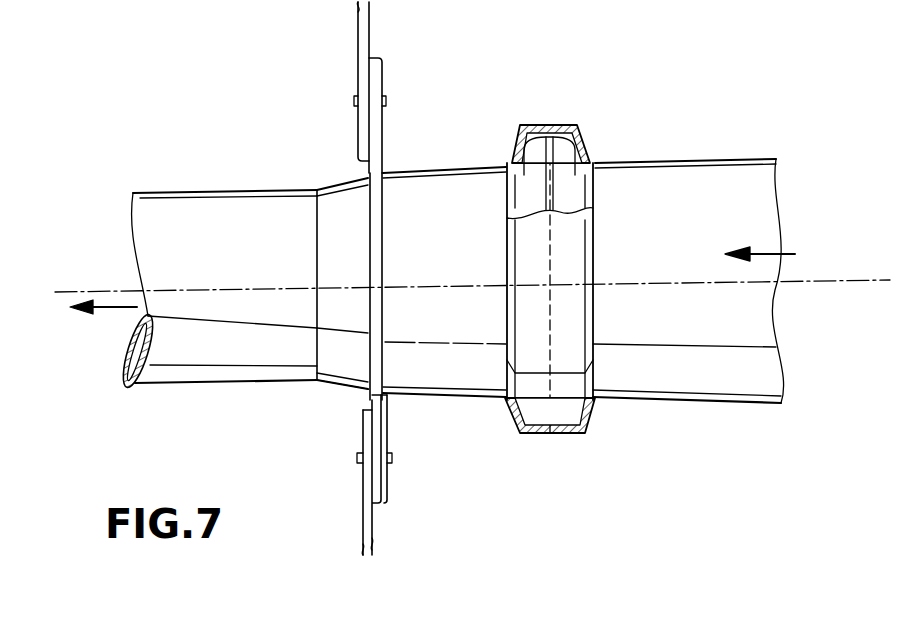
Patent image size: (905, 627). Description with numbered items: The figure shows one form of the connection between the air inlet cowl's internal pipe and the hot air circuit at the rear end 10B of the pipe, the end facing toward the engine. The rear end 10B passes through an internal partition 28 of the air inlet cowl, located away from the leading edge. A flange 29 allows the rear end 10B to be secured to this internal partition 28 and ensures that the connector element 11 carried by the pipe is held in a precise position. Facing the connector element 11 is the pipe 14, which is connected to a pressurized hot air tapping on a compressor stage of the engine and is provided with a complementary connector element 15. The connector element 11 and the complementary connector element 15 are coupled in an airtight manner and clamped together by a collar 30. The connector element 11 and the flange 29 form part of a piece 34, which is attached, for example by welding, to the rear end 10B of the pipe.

The rear end 10B is at (215, 207).
The pipe 14 is at (750, 181).
The internal partition 28 is at (358, 48).
The flange 29 is at (377, 83).
The piece 34 is at (340, 383).
The complementary connector element 15 is at (573, 125).
The collar 30 is at (540, 124).
The connector element 11 is at (520, 145).